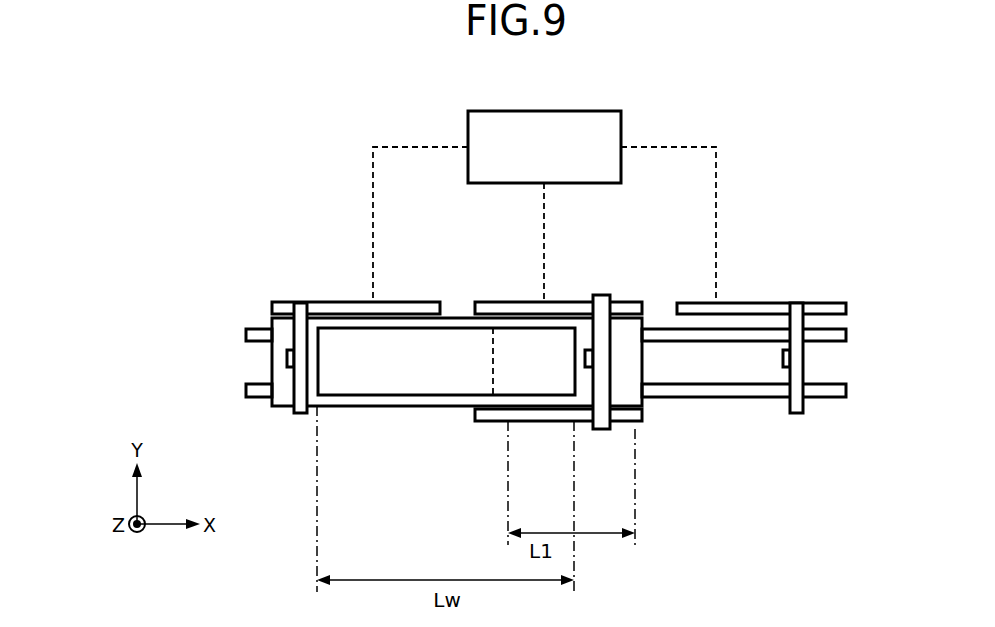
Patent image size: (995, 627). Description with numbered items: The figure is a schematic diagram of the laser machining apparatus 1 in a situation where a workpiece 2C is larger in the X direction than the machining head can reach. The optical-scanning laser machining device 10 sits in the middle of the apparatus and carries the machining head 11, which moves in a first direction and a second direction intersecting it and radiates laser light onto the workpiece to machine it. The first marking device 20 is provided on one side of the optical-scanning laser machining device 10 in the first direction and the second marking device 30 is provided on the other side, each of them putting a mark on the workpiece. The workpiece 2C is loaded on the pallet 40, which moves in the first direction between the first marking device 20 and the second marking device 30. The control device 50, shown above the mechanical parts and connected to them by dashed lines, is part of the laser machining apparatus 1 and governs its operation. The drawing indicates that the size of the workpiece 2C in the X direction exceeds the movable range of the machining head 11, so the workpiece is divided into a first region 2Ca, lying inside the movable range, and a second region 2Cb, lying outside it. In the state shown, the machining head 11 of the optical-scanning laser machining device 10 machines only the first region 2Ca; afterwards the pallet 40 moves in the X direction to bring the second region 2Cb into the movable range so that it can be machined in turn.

The laser machining apparatus 1 is at (168, 143).
The optical-scanning laser machining device 10 is at (571, 322).
The machining head 11 is at (586, 351).
The first marking device 20 is at (273, 267).
The second marking device 30 is at (852, 268).
The pallet 40 is at (410, 407).
The control device 50 is at (568, 111).
The workpiece 2C is at (441, 316).
The first region 2Ca is at (530, 342).
The second region 2Cb is at (343, 342).